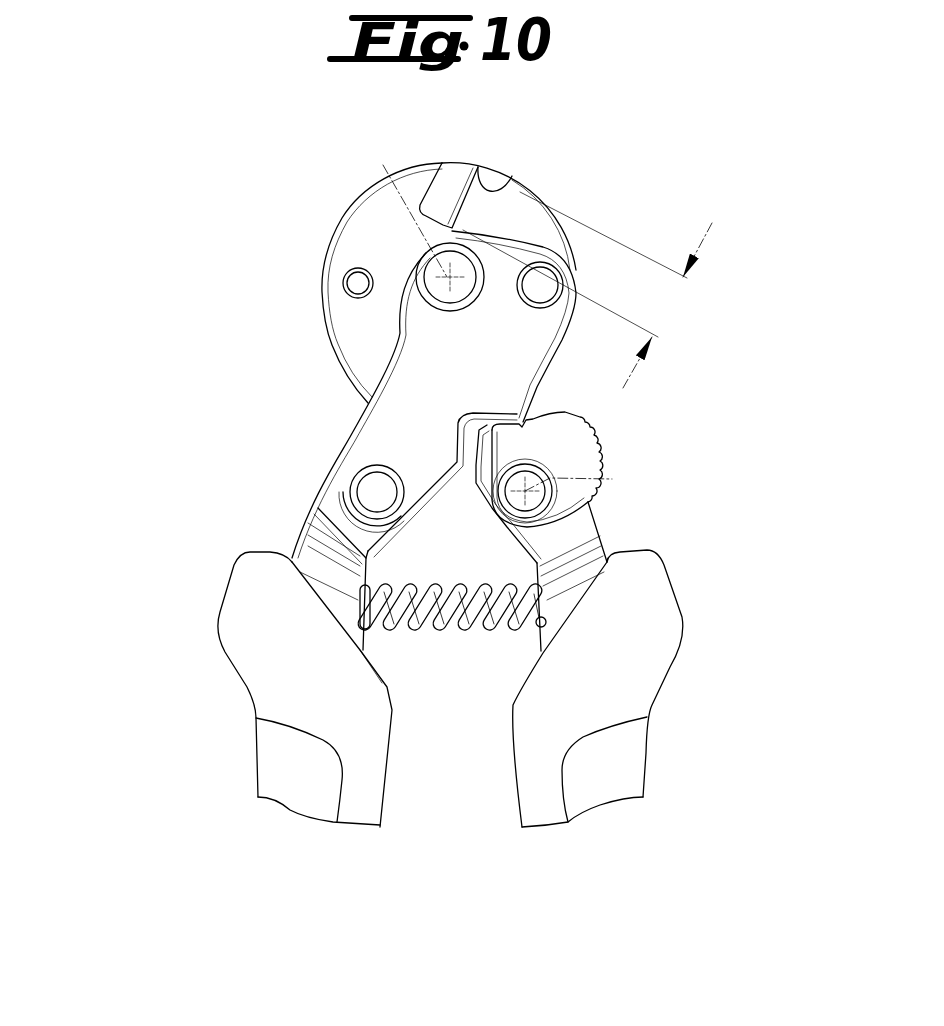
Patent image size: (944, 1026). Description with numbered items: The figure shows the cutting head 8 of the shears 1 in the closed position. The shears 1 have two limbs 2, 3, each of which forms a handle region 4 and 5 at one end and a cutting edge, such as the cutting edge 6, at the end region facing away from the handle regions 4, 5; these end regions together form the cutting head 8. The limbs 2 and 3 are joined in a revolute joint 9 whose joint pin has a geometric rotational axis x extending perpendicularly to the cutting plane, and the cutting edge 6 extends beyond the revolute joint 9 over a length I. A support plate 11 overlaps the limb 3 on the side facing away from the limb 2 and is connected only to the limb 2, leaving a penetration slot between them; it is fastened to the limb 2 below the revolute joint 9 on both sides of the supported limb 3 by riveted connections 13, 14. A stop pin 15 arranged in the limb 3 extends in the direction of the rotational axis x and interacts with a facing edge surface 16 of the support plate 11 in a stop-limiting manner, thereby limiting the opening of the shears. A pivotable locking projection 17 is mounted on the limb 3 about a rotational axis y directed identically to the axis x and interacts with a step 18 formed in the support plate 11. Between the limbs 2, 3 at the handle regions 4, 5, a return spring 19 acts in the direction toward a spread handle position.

The shears 1 is at (660, 175).
The limb 2 is at (200, 661).
The limb 3 is at (700, 661).
The handle region 4 is at (580, 565).
The handle region 5 is at (318, 555).
The cutting edge 6 is at (495, 190).
The cutting head 8 is at (550, 182).
The revolute joint 9 is at (430, 272).
The support plate 11 is at (420, 383).
The connection 13 is at (372, 490).
The connection 14 is at (545, 297).
The stop pin 15 is at (358, 283).
The edge surface 16 is at (395, 333).
The locking projection 17 is at (503, 433).
The step 18 is at (463, 485).
The return spring 19 is at (428, 626).
The rotational axis x is at (411, 203).
The rotational axis y is at (562, 491).
The length I is at (587, 290).